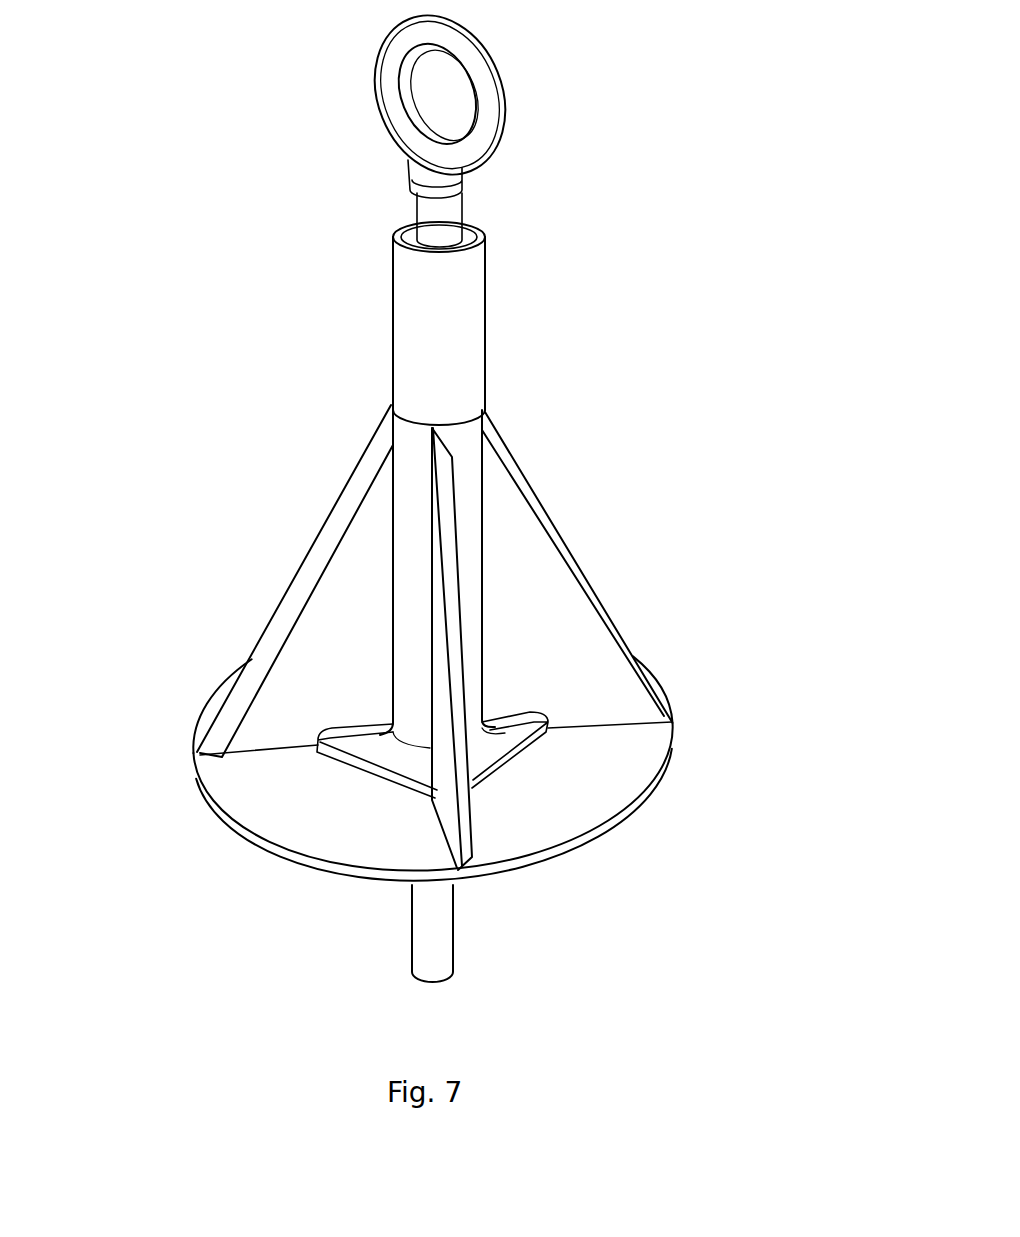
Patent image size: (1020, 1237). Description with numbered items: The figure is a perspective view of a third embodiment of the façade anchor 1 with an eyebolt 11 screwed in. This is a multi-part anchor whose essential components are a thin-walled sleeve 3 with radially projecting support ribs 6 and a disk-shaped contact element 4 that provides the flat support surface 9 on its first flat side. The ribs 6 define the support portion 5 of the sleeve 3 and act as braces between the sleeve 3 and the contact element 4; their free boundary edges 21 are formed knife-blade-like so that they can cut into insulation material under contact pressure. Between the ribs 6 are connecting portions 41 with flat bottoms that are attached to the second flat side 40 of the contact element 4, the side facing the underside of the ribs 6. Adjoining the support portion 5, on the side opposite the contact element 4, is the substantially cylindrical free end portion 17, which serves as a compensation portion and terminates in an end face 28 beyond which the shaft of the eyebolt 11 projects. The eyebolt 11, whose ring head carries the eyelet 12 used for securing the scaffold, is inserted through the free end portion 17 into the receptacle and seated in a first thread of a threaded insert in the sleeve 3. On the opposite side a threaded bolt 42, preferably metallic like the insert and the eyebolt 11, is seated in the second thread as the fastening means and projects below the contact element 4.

The façade anchor 1 is at (623, 288).
The sleeve 3 is at (475, 500).
The contact element 4 is at (685, 760).
The support portion 5 is at (732, 462).
The support ribs 6 is at (553, 585).
The support surface 9 is at (318, 873).
The eyebolt 11 is at (565, 107).
The eyelet 12 is at (437, 95).
The free end portion 17 is at (325, 310).
The free boundary edge 21 is at (317, 530).
The end face 28 is at (473, 213).
The second flat side 40 is at (613, 745).
The connecting portions 41 is at (378, 746).
The threaded bolt 42 is at (437, 942).